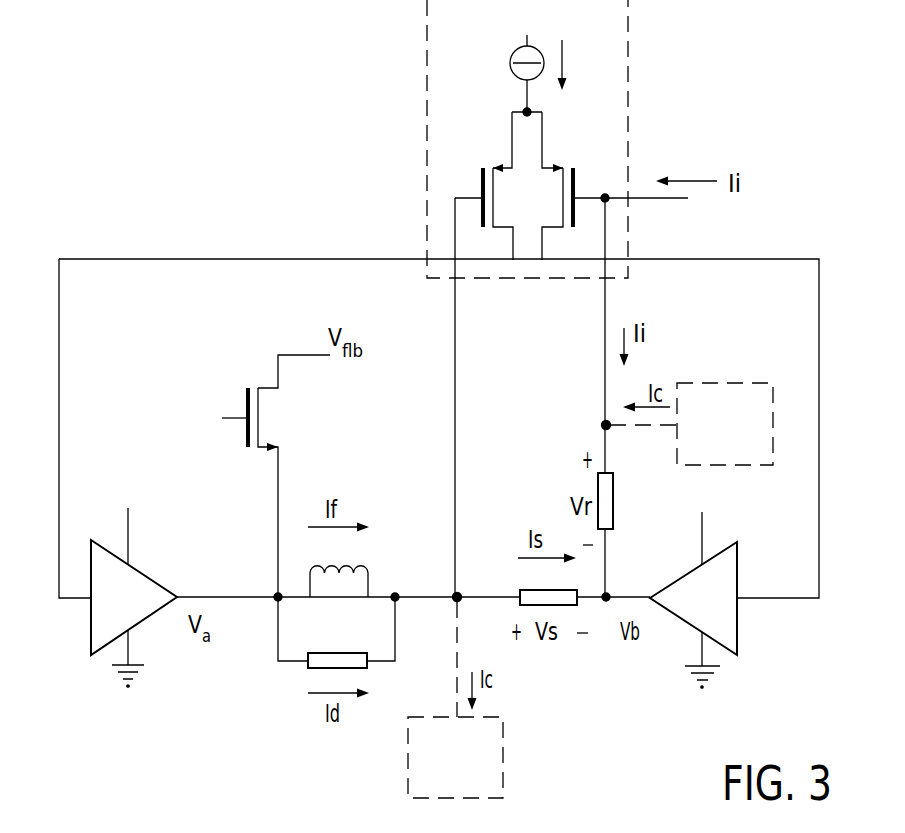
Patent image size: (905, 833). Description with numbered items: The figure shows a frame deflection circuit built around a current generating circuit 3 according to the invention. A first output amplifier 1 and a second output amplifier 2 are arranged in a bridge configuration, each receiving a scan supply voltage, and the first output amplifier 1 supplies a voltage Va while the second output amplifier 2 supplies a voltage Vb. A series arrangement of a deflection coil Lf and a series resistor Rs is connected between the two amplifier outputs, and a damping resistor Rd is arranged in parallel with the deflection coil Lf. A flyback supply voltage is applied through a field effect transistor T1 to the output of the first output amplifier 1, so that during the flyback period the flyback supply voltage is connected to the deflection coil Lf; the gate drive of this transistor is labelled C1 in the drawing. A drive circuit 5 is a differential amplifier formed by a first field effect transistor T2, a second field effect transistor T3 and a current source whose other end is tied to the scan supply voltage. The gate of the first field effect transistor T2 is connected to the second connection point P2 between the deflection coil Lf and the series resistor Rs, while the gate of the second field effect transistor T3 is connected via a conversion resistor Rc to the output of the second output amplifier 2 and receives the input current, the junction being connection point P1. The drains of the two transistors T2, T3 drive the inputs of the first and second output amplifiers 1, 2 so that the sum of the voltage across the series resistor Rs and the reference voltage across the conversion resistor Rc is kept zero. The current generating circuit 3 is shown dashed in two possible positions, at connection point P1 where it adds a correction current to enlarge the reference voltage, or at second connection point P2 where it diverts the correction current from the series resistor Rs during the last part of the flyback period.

The first output amplifier 1 is at (106, 560).
The second output amplifier 2 is at (730, 566).
The current generating circuit 3 is at (748, 388).
The drive circuit 5 is at (426, 20).
The field effect transistor T1 is at (266, 423).
The first field effect transistor T2 is at (483, 170).
The second field effect transistor T3 is at (572, 170).
The control input C1 is at (224, 403).
The deflection coil Lf is at (335, 573).
The damping resistor Rd is at (350, 658).
The series resistor Rs is at (529, 592).
The conversion resistor Rc is at (610, 488).
The connection point P1 is at (604, 424).
The second connection point P2 is at (455, 595).